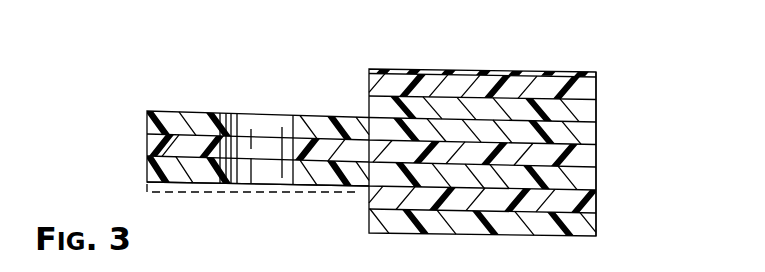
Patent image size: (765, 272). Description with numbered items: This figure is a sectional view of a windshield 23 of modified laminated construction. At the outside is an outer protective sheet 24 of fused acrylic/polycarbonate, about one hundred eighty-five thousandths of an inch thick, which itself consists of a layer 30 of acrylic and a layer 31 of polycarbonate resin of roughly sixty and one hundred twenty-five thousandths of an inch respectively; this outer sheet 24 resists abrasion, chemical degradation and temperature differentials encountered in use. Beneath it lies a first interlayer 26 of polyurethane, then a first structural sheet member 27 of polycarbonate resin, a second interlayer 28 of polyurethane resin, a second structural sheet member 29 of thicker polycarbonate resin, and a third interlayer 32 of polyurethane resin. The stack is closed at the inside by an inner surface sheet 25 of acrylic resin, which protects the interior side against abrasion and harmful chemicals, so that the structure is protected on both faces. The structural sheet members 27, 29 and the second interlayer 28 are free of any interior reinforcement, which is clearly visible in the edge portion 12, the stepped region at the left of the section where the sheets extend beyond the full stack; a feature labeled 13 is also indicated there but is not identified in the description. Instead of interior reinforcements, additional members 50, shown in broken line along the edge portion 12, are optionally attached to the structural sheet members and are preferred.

The edge portion 12 is at (169, 110).
The cut lines / joint region 13 is at (288, 176).
The windshield 23 is at (475, 56).
The outer protective sheet 24 is at (607, 97).
The inner surface sheet 25 is at (585, 227).
The first interlayer 26 is at (592, 113).
The first structural sheet member 27 is at (592, 138).
The second interlayer 28 is at (588, 153).
The second structural sheet member 29 is at (592, 183).
The layer of acrylic 30 is at (598, 73).
The layer of polycarbonate resin 31 is at (597, 87).
The third interlayer 32 is at (590, 205).
The additional members 50 is at (199, 193).